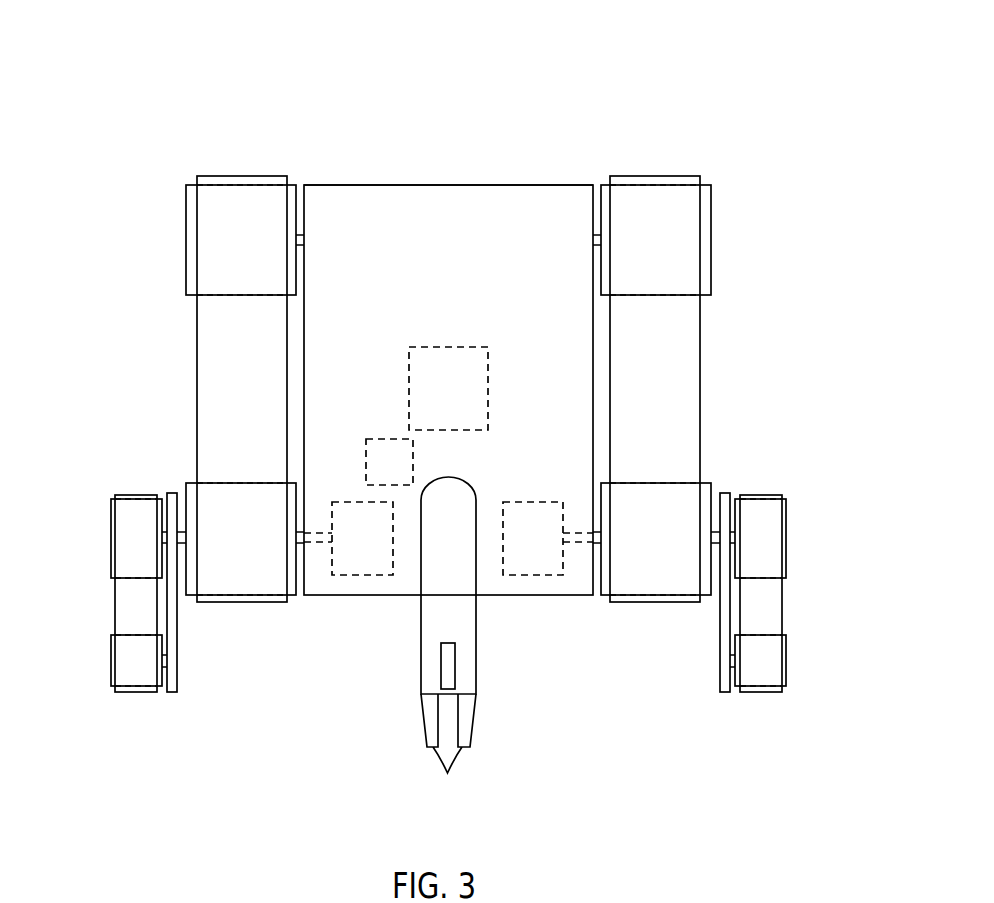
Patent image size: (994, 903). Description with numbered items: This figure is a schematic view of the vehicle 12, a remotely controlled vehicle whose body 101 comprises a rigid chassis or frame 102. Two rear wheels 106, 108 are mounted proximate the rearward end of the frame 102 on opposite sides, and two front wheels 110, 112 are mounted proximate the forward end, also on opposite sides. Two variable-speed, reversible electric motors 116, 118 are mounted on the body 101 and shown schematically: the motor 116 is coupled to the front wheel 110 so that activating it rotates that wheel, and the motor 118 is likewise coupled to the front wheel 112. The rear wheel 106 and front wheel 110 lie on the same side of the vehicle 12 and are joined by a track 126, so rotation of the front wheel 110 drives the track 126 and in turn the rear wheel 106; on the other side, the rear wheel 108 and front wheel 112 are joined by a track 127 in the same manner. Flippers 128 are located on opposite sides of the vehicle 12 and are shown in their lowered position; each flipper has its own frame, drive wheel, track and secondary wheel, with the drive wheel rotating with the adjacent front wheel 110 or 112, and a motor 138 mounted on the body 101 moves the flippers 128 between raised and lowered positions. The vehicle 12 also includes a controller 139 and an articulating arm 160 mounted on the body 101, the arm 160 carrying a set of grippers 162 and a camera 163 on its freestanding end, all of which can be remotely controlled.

The vehicle 12 is at (608, 60).
The body 101 is at (450, 214).
The frame 102 is at (512, 185).
The rear wheel 106 is at (675, 191).
The rear wheel 108 is at (222, 191).
The front wheel 110 is at (662, 587).
The front wheel 112 is at (235, 587).
The electric motor 116 is at (544, 550).
The electric motor 118 is at (373, 550).
The track 126 is at (687, 397).
The track 127 is at (210, 397).
The flipper 128 is at (146, 554).
The motor 138 is at (401, 469).
The controller 139 is at (460, 398).
The articulating arm 160 is at (485, 626).
The grippers 162 is at (448, 773).
The camera 163 is at (456, 666).